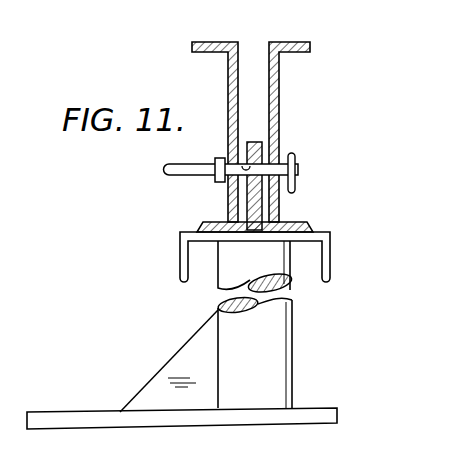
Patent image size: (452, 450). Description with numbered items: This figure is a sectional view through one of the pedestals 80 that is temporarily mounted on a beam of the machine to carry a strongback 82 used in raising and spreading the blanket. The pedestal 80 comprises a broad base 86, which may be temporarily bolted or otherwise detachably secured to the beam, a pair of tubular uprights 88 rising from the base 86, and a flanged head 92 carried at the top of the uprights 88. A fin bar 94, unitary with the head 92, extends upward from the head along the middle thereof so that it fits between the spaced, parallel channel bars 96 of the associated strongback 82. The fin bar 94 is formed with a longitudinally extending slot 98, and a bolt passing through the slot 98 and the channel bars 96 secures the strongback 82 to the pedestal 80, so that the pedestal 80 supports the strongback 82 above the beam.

The pedestal 80 is at (170, 251).
The strongback 82 is at (311, 58).
The broad base 86 is at (86, 421).
The tubular upright 88 is at (290, 270).
The flanged head 92 is at (182, 268).
The fin bar 94 is at (279, 137).
The channel bar 96 is at (228, 92).
The longitudinally extending slot 98 is at (244, 164).